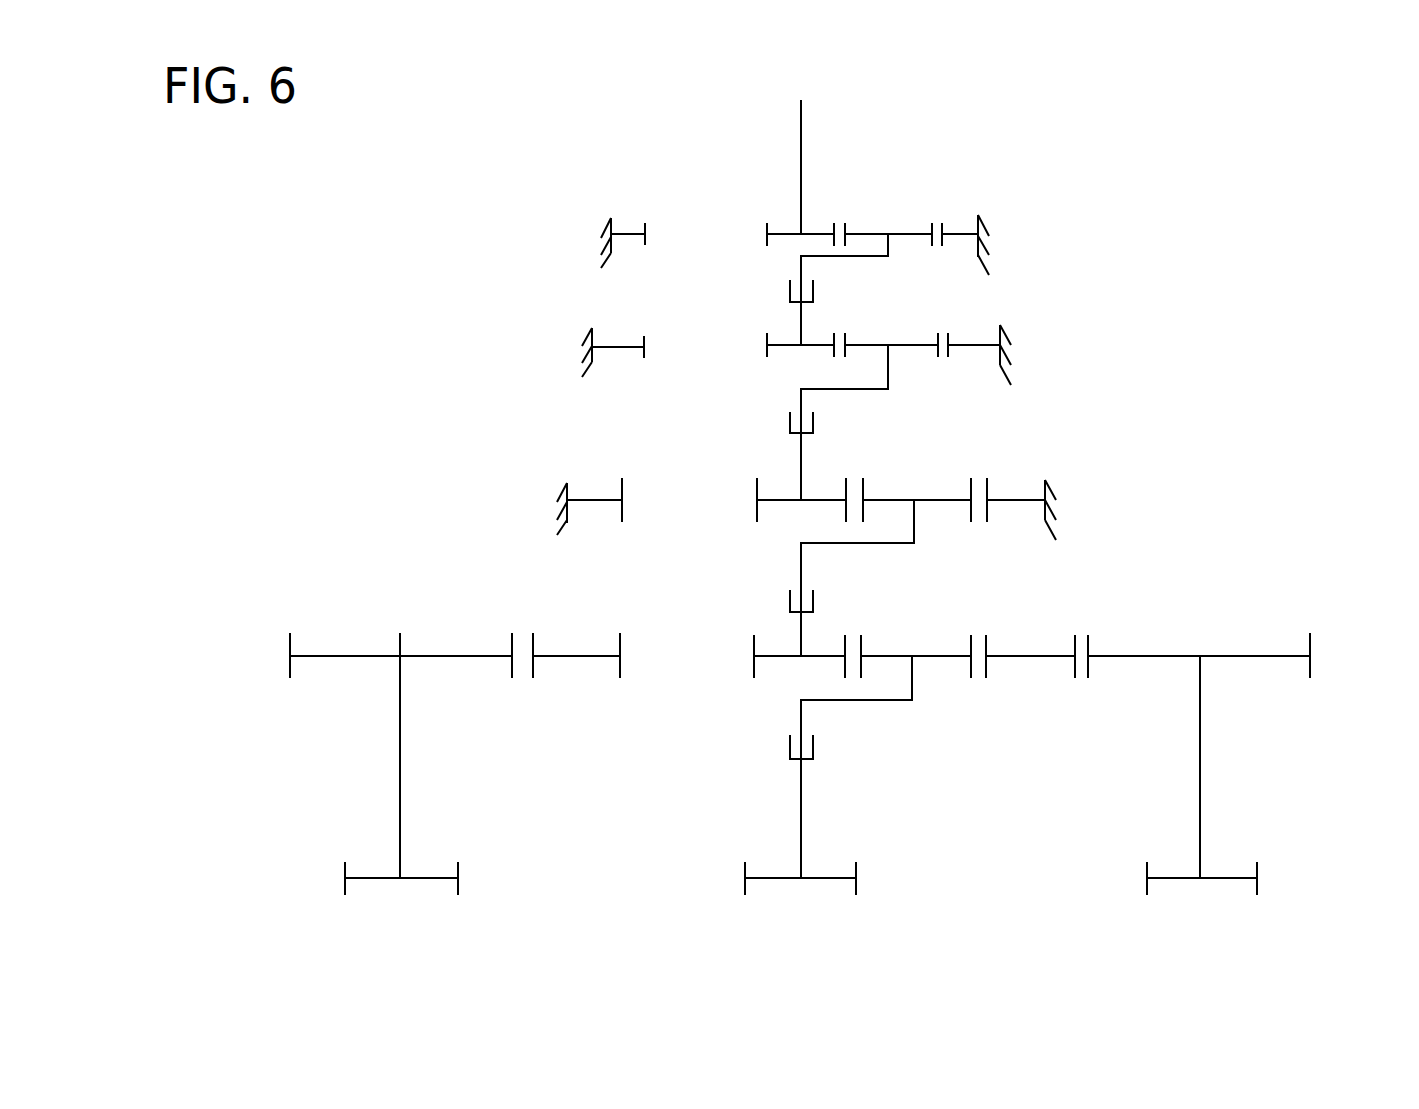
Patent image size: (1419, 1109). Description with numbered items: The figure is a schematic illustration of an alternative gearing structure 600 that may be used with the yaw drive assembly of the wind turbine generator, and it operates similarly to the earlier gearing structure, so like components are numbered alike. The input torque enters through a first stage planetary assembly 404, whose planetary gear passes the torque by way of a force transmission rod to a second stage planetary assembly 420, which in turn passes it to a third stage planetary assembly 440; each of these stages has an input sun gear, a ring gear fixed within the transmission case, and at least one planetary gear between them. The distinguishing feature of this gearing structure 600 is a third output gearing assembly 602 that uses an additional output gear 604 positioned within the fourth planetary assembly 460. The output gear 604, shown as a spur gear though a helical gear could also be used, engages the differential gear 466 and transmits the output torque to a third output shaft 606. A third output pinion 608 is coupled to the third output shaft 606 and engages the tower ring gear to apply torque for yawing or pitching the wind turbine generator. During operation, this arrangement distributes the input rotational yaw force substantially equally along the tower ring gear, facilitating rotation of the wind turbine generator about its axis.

The gearing structure 600 is at (1279, 191).
The first stage planetary assembly 404 is at (568, 217).
The second stage planetary assembly 420 is at (546, 337).
The third stage planetary assembly 440 is at (517, 494).
The fourth planetary assembly 460 is at (396, 742).
The third output gearing assembly 602 is at (394, 598).
The output gear 604 is at (335, 656).
The third output shaft 606 is at (400, 772).
The third output pinion 608 is at (418, 880).
The differential gear 466 is at (575, 656).